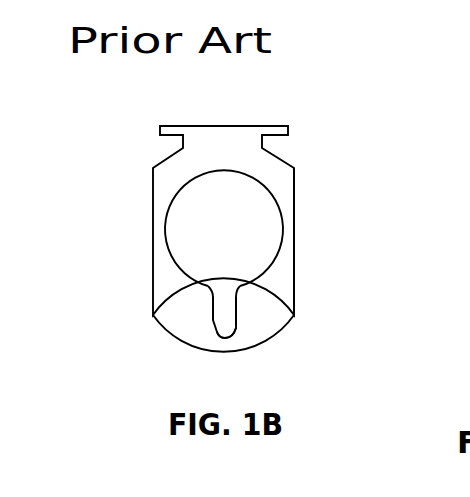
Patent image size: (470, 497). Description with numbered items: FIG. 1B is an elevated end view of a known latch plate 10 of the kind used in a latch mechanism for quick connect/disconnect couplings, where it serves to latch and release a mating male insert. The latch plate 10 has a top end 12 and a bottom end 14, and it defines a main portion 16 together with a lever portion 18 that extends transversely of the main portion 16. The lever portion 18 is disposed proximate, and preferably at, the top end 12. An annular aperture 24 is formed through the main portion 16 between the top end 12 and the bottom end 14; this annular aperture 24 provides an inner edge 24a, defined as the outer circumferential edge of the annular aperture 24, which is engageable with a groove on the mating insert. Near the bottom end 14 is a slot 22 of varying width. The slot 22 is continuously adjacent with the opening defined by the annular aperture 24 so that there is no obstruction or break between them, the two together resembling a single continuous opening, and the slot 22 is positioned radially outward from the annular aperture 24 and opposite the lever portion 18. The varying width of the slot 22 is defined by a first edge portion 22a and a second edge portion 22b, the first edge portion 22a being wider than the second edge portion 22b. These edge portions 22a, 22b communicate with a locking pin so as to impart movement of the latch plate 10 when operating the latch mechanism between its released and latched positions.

The latch plate 10 is at (249, 252).
The top end 12 is at (182, 129).
The bottom end 14 is at (173, 342).
The main portion 16 is at (295, 228).
The lever portion 18 is at (285, 132).
The slot 22 is at (236, 303).
The first edge portion 22a is at (212, 302).
The second edge portion 22b is at (214, 324).
The annular aperture 24 is at (187, 215).
The inner edge 24a is at (190, 282).